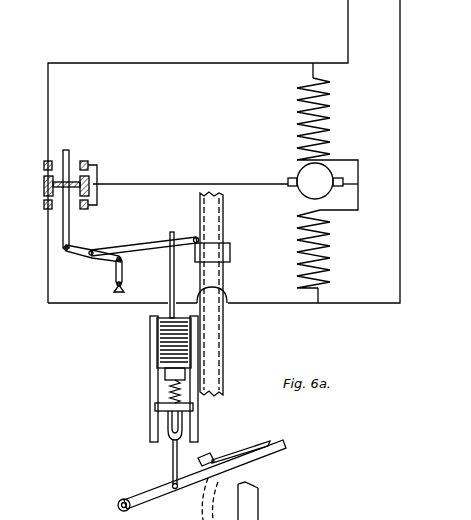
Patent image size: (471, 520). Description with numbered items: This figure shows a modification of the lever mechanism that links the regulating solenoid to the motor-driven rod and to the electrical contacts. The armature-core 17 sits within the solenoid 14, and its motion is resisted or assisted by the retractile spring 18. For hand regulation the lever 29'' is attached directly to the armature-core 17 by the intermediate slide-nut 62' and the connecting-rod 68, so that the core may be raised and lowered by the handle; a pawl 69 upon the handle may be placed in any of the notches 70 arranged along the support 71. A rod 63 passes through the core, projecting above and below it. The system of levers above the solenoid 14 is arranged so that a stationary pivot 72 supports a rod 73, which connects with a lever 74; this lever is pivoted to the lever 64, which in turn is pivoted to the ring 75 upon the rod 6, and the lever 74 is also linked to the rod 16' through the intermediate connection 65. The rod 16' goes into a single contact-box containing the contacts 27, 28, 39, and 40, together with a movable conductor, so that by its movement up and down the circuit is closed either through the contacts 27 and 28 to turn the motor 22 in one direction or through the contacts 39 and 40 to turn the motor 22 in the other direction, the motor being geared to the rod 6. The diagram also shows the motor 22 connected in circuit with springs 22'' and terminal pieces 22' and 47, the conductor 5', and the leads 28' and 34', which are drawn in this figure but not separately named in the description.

The contact 39 is at (43, 166).
The contact 5' is at (28, 187).
The contact 28 is at (28, 211).
The contact 40 is at (90, 163).
The contact 27 is at (88, 205).
The rod 16' is at (88, 188).
The lever 65 is at (70, 232).
The lever 74 is at (70, 254).
The lever 64 is at (147, 246).
The rod 73 is at (122, 270).
The stationary pivot 72 is at (114, 284).
The rod 63 is at (170, 275).
The rod 6 is at (212, 229).
The ring 75 is at (225, 253).
The lead 28' is at (310, 60).
The spring 22'' is at (331, 183).
The motor 22 is at (327, 185).
The terminal 22' is at (277, 175).
The terminal 47 is at (344, 182).
The lead 34' is at (320, 306).
The solenoid 14 is at (156, 341).
The core 17 is at (164, 374).
The retractile spring 18 is at (168, 392).
The slide-nut 62' is at (145, 421).
The connecting-rod 68 is at (170, 462).
The lever 29'' is at (219, 472).
The notches 70 is at (210, 463).
The pawl 69 is at (248, 448).
The support 71 is at (203, 497).